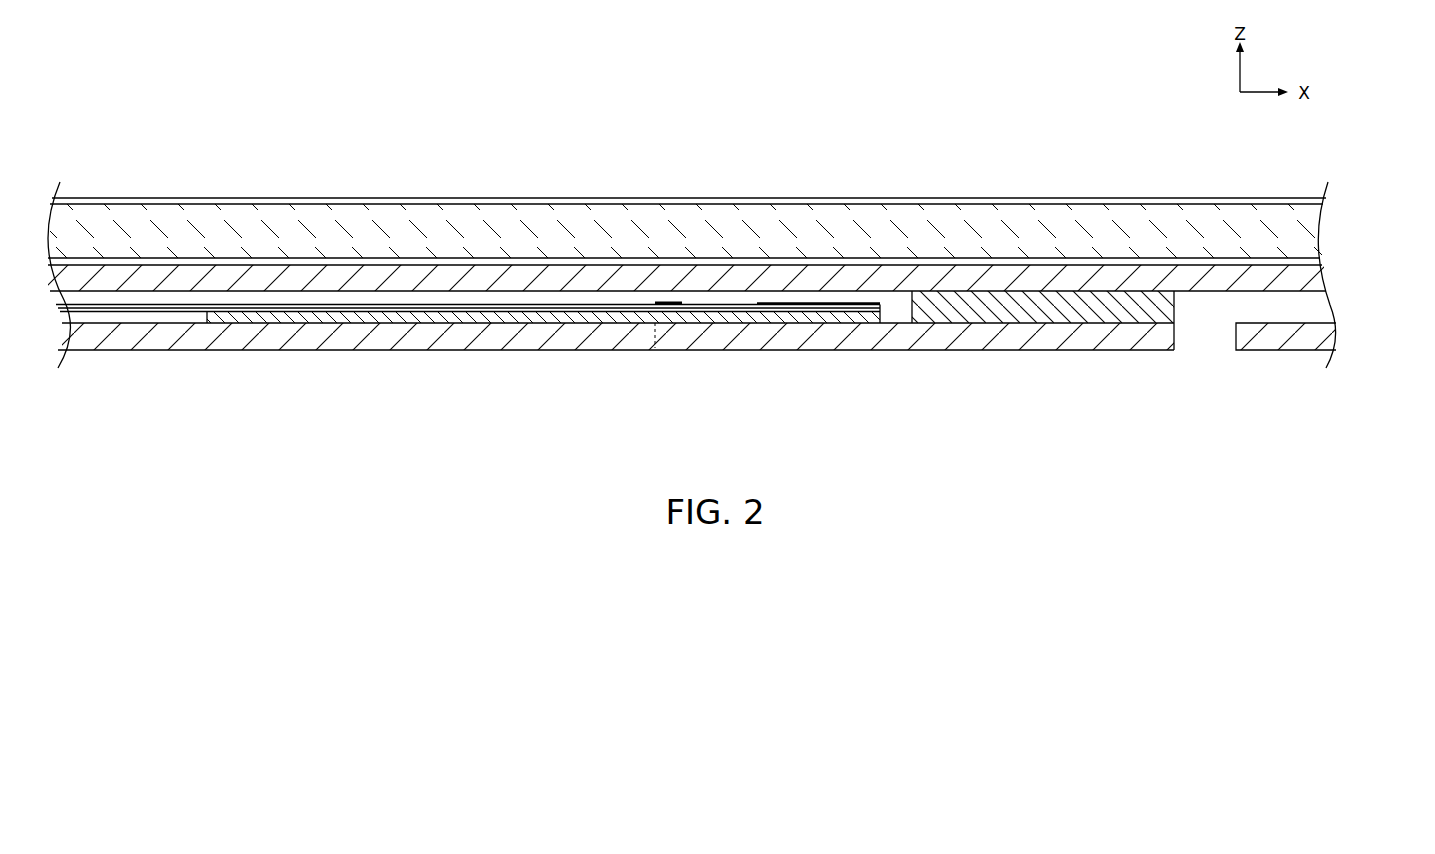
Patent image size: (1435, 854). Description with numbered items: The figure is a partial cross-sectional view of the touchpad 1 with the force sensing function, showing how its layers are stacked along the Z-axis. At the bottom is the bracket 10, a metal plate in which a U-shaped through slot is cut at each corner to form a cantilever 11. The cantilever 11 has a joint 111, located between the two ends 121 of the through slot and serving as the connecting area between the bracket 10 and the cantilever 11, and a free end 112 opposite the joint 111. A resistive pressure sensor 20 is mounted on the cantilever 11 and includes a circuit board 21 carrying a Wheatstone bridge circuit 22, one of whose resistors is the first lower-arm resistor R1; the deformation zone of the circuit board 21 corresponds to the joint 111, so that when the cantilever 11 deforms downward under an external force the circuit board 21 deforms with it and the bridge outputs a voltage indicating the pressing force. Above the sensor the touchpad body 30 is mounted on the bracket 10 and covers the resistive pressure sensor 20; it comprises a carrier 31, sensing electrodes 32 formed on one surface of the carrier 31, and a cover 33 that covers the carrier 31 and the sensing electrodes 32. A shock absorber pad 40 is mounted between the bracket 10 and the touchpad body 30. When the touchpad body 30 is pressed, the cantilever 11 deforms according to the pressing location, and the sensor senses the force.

The touchpad 1 is at (1075, 96).
The bracket 10 is at (739, 353).
The cantilever 11 is at (616, 353).
The joint 111 is at (685, 337).
The free end 112 is at (1178, 338).
The end of U-shaped through slot 121 is at (655, 322).
The resistive pressure sensor 20 is at (468, 276).
The circuit board 21 is at (790, 303).
The Wheatstone bridge circuit 22 is at (670, 285).
The touchpad body 30 is at (718, 196).
The carrier 31 is at (985, 270).
The sensing electrode 32 is at (943, 258).
The cover 33 is at (902, 232).
The shock absorber pad 40 is at (1024, 315).
The first lower-arm resistor R1 is at (667, 302).